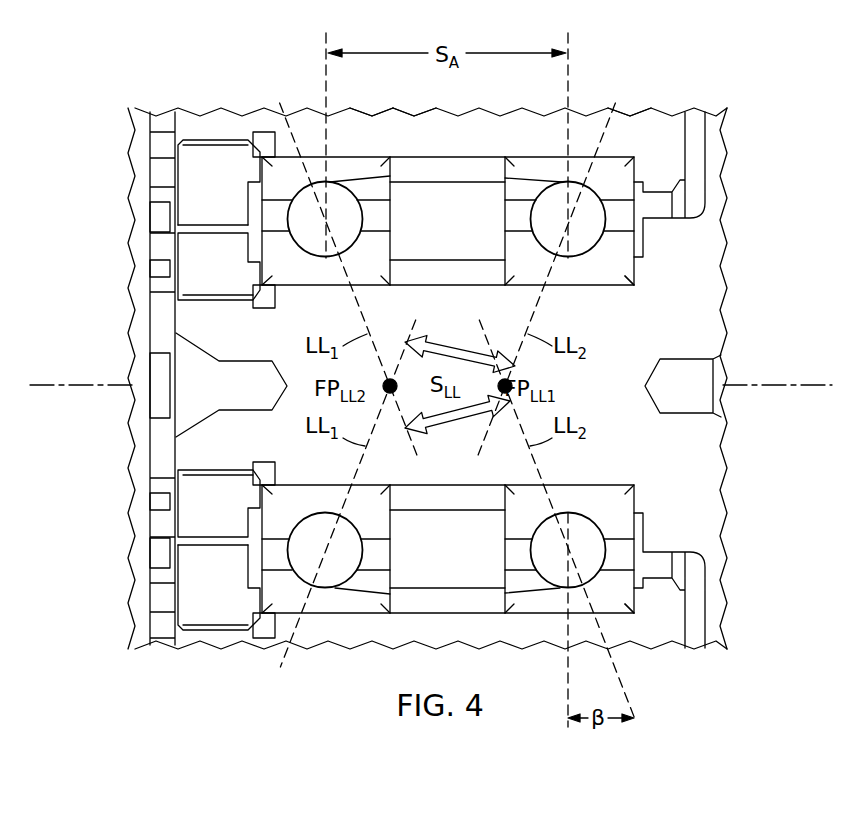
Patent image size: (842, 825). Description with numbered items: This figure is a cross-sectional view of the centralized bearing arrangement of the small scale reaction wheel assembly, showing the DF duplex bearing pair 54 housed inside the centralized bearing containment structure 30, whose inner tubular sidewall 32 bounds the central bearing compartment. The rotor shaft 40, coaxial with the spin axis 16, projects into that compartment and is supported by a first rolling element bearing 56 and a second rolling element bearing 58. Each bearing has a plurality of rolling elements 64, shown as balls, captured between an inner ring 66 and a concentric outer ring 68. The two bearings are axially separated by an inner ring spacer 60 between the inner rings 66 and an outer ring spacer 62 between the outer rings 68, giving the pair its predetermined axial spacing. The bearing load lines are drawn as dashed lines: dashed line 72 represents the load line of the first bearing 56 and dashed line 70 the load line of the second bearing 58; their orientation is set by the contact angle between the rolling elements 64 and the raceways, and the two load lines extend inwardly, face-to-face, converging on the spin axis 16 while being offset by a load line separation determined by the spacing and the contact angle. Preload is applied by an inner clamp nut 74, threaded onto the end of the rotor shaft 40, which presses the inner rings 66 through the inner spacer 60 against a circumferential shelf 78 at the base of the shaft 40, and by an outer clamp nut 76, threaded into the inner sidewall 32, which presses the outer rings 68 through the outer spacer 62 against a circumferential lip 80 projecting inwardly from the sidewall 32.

The spin axis 16 is at (78, 383).
The centralized bearing containment structure 30 is at (627, 123).
The inner tubular sidewall 32 is at (444, 148).
The rotor shaft 40 is at (594, 398).
The DF duplex bearing pair 54 is at (410, 136).
The first rolling element bearing 56 is at (260, 163).
The second rolling element bearing 58 is at (633, 164).
The inner ring spacer 60 is at (430, 259).
The outer ring spacer 62 is at (468, 183).
The rolling elements 64 is at (294, 232).
The inner ring 66 is at (320, 284).
The outer ring 68 is at (355, 166).
The dashed line representing second bearing load line 70 is at (530, 308).
The dashed line representing first bearing load line 72 is at (365, 308).
The inner clamp nut 74 is at (201, 272).
The outer clamp nut 76 is at (193, 215).
The circumferential shelf 78 is at (640, 285).
The circumferential lip 80 is at (640, 613).